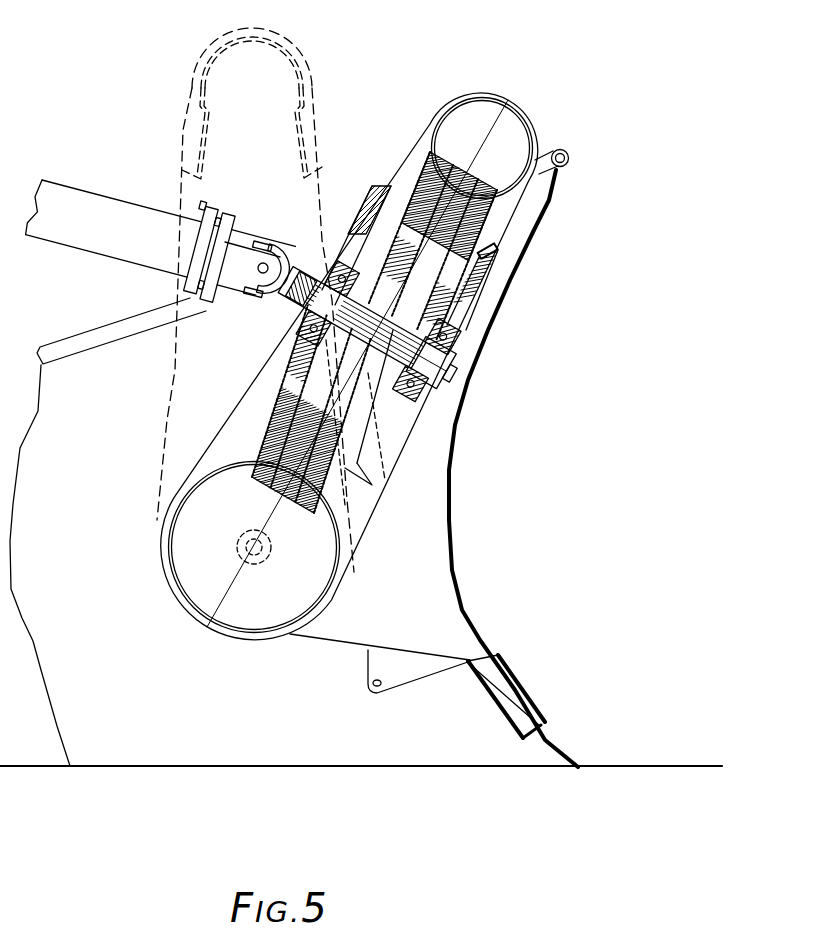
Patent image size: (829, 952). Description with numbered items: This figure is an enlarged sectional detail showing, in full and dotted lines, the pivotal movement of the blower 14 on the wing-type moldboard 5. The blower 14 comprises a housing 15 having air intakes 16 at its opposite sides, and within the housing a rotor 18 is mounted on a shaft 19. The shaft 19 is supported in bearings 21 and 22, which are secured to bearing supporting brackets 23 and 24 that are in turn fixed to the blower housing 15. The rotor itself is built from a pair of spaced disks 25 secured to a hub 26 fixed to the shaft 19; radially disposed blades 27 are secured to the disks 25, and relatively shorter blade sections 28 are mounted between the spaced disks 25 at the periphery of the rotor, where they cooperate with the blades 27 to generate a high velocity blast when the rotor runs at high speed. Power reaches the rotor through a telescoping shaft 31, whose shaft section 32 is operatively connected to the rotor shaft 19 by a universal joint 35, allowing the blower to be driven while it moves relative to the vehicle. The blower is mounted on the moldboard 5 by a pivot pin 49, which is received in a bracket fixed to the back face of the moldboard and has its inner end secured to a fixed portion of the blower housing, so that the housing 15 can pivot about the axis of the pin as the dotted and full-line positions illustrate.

The wing-type moldboard 5 is at (462, 532).
The blower 14 is at (285, 36).
The blower housing 15 is at (483, 100).
The air intakes 16 is at (377, 205).
The rotor 18 is at (492, 176).
The shaft 19 is at (428, 359).
The bearing 21 is at (307, 316).
The bearing 22 is at (420, 380).
The bearing supporting bracket 23 is at (303, 339).
The bearing supporting bracket 24 is at (412, 402).
The spaced disks 25 is at (272, 470).
The hub 26 is at (384, 322).
The radially disposed blades 27 is at (478, 216).
The blade sections 28 is at (463, 180).
The telescoping shaft 31 is at (67, 186).
The shaft section 32 is at (62, 224).
The universal joint 35 is at (265, 240).
The pivot pin 49 is at (247, 547).